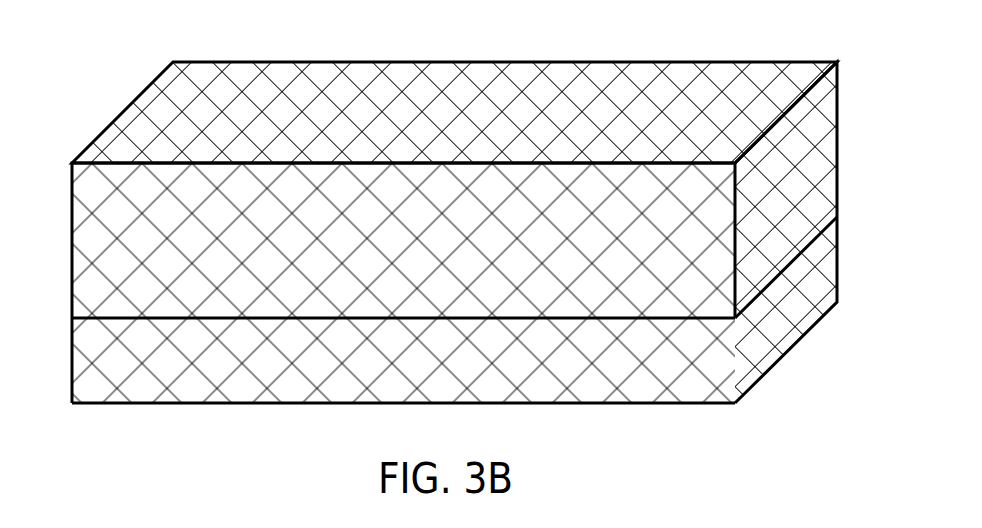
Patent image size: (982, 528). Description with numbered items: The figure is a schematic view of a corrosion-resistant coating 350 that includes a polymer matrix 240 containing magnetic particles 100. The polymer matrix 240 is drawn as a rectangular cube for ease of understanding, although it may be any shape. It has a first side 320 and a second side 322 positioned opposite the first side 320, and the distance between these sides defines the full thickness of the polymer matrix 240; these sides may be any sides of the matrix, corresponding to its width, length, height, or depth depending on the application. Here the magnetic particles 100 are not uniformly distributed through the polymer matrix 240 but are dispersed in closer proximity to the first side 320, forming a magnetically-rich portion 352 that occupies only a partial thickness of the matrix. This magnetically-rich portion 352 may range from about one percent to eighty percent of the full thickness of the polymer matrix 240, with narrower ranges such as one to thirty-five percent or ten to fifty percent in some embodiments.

The magnetic particles 100 is at (103, 366).
The polymer matrix 240 is at (100, 245).
The first side 320 is at (667, 412).
The second side 322 is at (686, 155).
The corrosion-resistant coating 350 is at (828, 342).
The magnetically-rich portion 352 is at (843, 213).